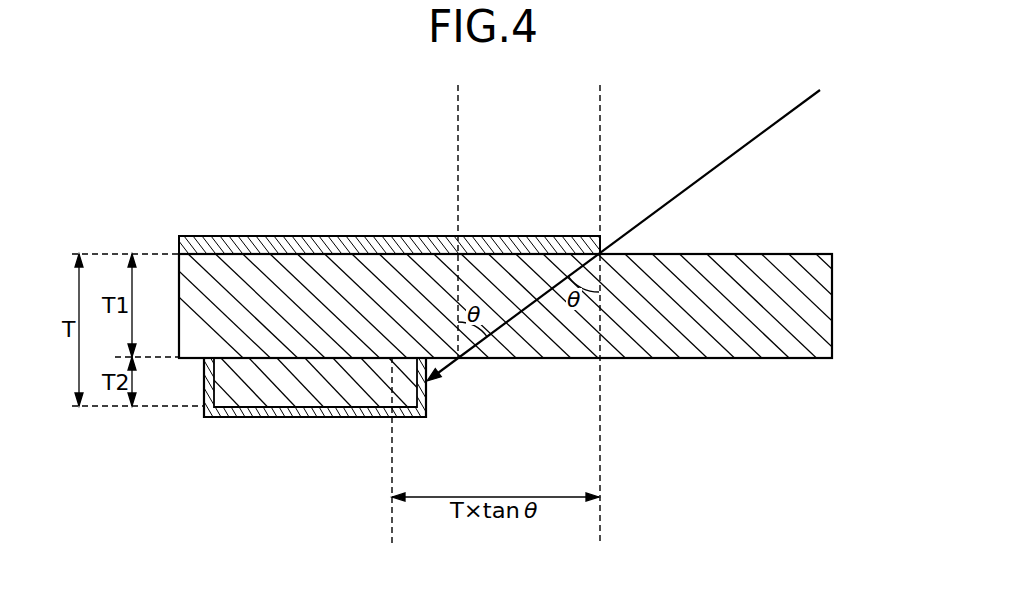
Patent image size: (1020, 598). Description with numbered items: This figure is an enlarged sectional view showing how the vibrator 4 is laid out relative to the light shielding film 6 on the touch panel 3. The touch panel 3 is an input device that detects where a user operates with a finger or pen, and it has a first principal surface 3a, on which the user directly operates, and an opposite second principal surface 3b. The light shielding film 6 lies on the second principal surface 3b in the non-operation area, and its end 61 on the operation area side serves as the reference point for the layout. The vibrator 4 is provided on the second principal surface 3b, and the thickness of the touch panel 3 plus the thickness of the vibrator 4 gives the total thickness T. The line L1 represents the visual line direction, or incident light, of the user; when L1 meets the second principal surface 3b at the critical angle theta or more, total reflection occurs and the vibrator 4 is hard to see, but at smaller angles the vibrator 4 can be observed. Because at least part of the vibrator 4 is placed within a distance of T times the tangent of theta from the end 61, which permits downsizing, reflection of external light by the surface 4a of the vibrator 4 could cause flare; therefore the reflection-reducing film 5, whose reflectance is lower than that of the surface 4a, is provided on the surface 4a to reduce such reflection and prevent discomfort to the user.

The touch panel 3 is at (820, 307).
The first principal surface 3a is at (770, 250).
The second principal surface 3b is at (780, 360).
The vibrator 4 is at (265, 400).
The surface of the vibrator 4a is at (300, 408).
The reflection-reducing film 5 is at (222, 420).
The light shielding film 6 is at (295, 245).
The end of the light shielding film 61 is at (580, 238).
The visual line direction L1 is at (735, 152).